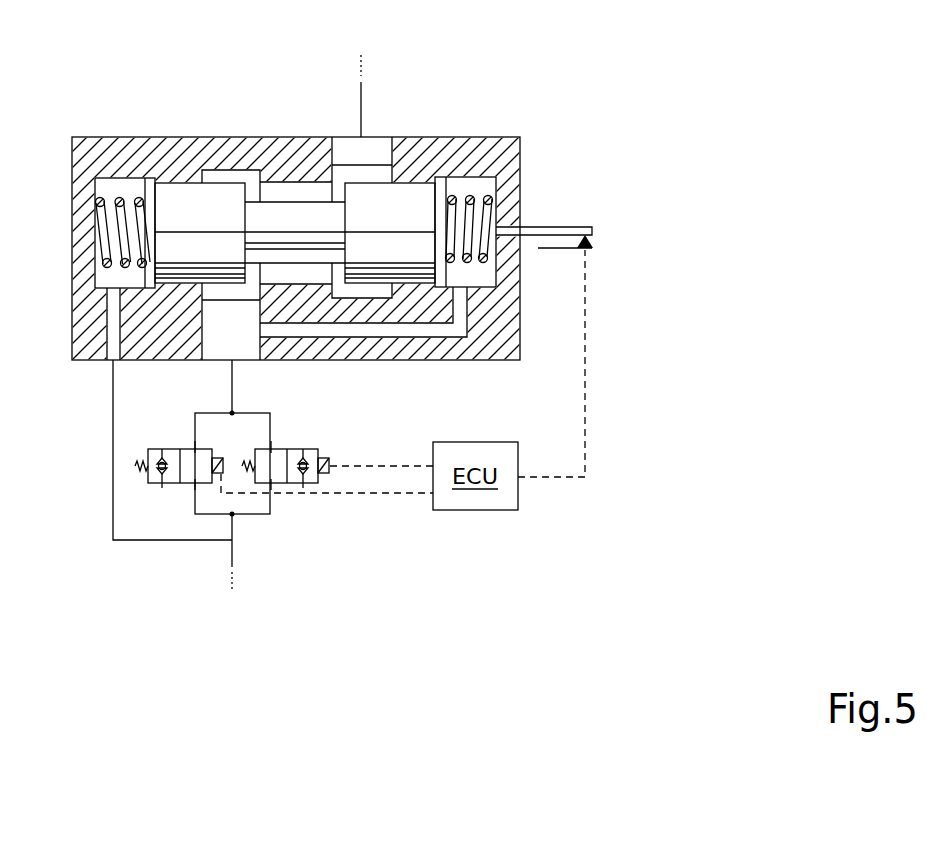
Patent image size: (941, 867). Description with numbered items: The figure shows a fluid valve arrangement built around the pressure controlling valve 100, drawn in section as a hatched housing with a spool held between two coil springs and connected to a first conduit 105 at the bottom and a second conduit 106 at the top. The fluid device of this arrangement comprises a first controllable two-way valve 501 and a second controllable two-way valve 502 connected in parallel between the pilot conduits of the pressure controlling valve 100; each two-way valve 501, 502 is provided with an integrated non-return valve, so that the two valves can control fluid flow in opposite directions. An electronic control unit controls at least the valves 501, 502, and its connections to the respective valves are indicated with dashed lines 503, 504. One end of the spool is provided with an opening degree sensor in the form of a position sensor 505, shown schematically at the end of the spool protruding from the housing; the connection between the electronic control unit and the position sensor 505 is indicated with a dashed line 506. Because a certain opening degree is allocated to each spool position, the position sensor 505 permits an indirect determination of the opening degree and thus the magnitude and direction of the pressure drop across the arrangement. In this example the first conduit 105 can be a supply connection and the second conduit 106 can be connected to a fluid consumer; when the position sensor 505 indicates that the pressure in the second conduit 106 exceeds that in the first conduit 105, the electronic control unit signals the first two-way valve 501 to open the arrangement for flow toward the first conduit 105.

The pressure controlling valve 100 is at (590, 114).
The first conduit 105 is at (230, 565).
The second conduit 106 is at (361, 82).
The first controllable two-way valve 501 is at (170, 483).
The second controllable two-way valve 502 is at (293, 483).
The dashed line 503 is at (367, 492).
The dashed line 504 is at (362, 463).
The position sensor 505 is at (604, 236).
The dashed line 506 is at (558, 477).